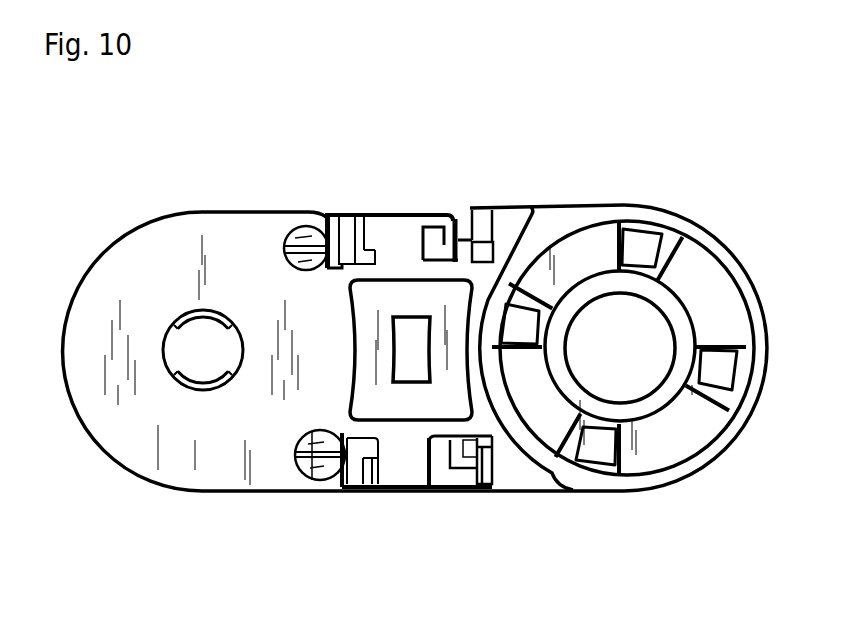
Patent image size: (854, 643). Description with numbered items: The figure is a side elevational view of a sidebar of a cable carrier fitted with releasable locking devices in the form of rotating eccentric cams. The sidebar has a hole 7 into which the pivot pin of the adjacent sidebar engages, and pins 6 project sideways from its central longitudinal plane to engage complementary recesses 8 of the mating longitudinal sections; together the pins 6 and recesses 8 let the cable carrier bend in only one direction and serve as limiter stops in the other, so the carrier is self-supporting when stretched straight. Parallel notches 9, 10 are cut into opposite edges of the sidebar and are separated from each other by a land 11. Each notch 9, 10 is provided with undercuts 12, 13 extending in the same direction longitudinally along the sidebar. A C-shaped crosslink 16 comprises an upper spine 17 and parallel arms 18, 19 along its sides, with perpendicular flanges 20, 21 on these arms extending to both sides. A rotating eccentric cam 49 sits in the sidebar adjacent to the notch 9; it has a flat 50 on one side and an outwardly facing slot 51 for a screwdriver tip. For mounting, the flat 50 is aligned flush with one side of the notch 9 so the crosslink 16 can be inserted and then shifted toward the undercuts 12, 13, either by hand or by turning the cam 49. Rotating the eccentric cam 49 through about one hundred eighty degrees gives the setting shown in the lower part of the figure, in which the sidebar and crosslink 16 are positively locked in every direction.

The pins 6 is at (664, 224).
The hole 7 is at (643, 333).
The recesses 8 is at (707, 284).
The notch 9 is at (362, 222).
The notch 10 is at (478, 210).
The land 11 is at (416, 216).
The undercut 12 is at (530, 206).
The undercut 13 is at (372, 250).
The C-shaped crosslink 16 is at (411, 180).
The upper spine 17 is at (448, 215).
The arm 18 is at (450, 230).
The arm 19 is at (330, 224).
The flange 20 is at (482, 243).
The flange 21 is at (356, 232).
The rotating eccentric cam 49 is at (298, 226).
The flat 50 is at (305, 227).
The slot 51 is at (288, 234).